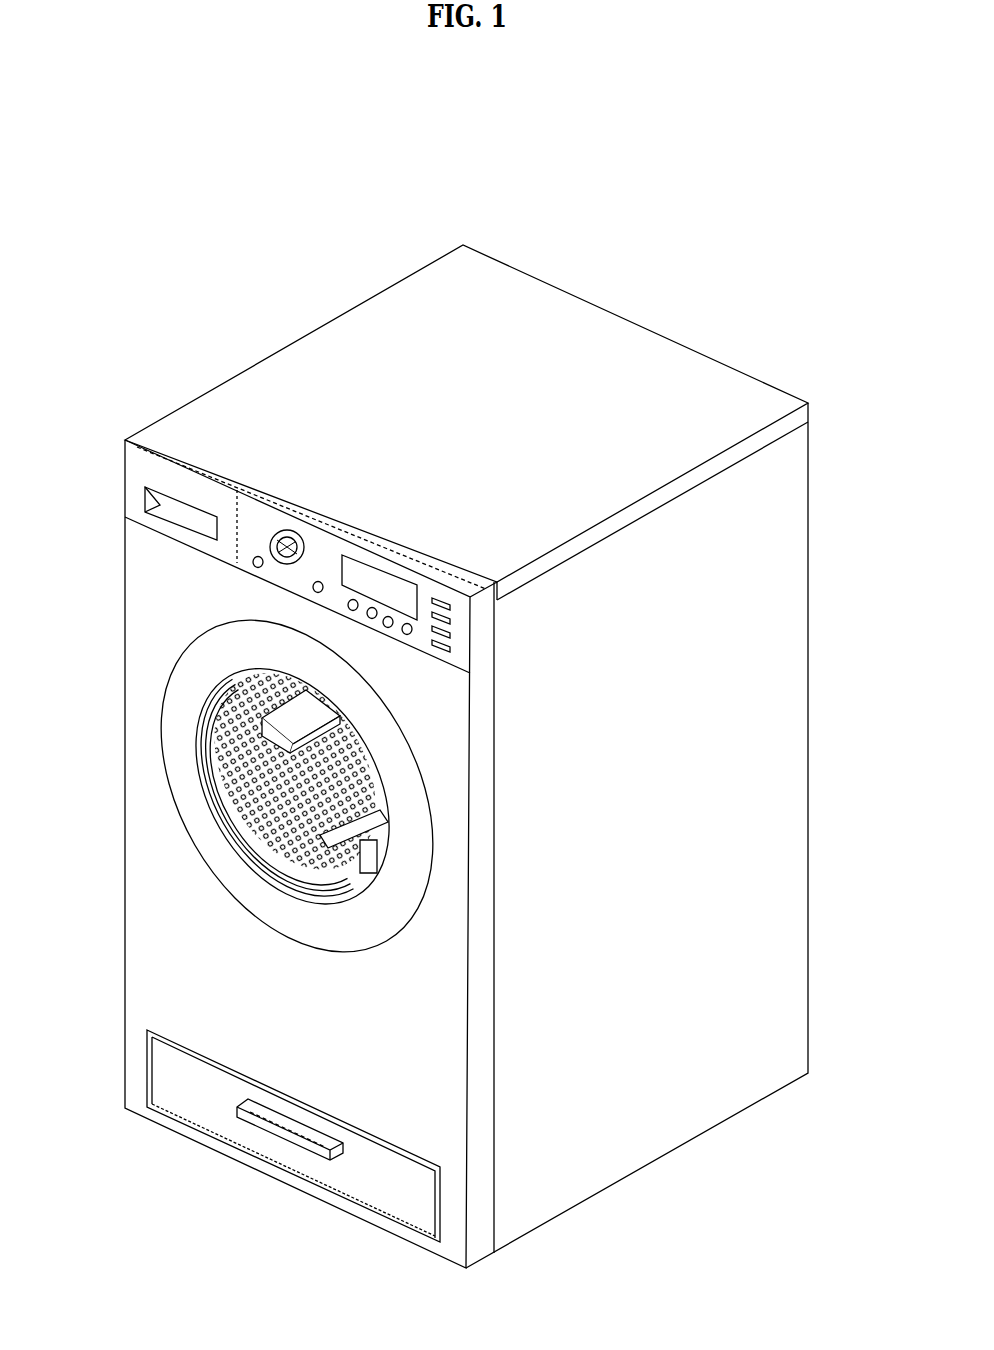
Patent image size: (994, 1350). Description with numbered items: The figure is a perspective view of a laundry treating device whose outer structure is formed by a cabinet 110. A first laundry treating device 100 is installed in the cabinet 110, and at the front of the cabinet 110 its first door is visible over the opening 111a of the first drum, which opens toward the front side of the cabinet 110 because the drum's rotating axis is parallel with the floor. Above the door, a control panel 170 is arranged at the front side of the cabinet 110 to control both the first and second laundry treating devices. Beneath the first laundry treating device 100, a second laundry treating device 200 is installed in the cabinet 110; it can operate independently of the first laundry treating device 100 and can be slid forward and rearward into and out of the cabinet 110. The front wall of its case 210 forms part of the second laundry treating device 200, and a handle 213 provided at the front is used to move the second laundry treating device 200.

The first laundry treating device 100 is at (186, 746).
The cabinet 110 is at (783, 732).
The opening 111a is at (272, 790).
The control panel 170 is at (254, 513).
The second laundry treating device 200 is at (374, 1172).
The case 210 is at (207, 1107).
The handle 213 is at (272, 1128).